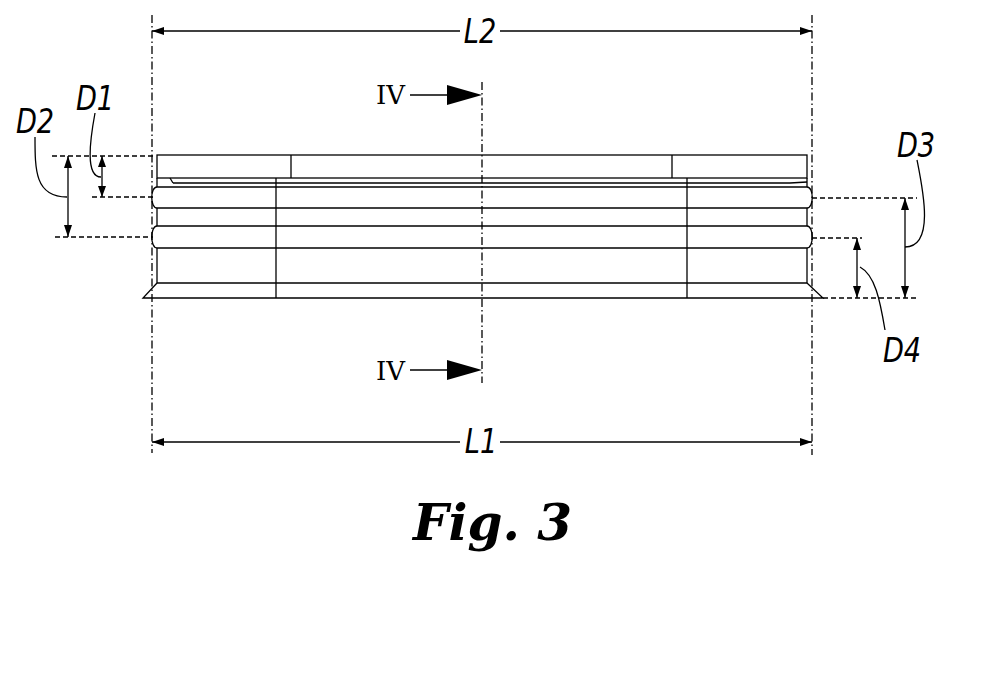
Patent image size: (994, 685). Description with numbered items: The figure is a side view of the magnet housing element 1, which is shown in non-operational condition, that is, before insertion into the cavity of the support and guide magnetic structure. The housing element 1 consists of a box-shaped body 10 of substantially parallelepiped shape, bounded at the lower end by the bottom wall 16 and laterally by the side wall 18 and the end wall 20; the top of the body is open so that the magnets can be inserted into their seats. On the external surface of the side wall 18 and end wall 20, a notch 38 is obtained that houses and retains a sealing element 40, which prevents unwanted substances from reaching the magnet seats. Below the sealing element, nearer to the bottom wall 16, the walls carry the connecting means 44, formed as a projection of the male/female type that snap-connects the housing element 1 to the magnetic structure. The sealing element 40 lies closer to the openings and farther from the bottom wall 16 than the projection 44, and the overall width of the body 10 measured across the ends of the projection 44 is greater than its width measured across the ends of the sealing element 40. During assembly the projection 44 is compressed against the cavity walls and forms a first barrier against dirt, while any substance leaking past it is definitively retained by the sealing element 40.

The housing element 1 is at (482, 133).
The box-shaped body 10 is at (648, 312).
The bottom wall 16 is at (530, 298).
The side wall 18 is at (157, 263).
The end wall 20 is at (335, 268).
The notch 38 is at (808, 183).
The sealing element 40 is at (228, 197).
The connecting means 44 is at (220, 242).